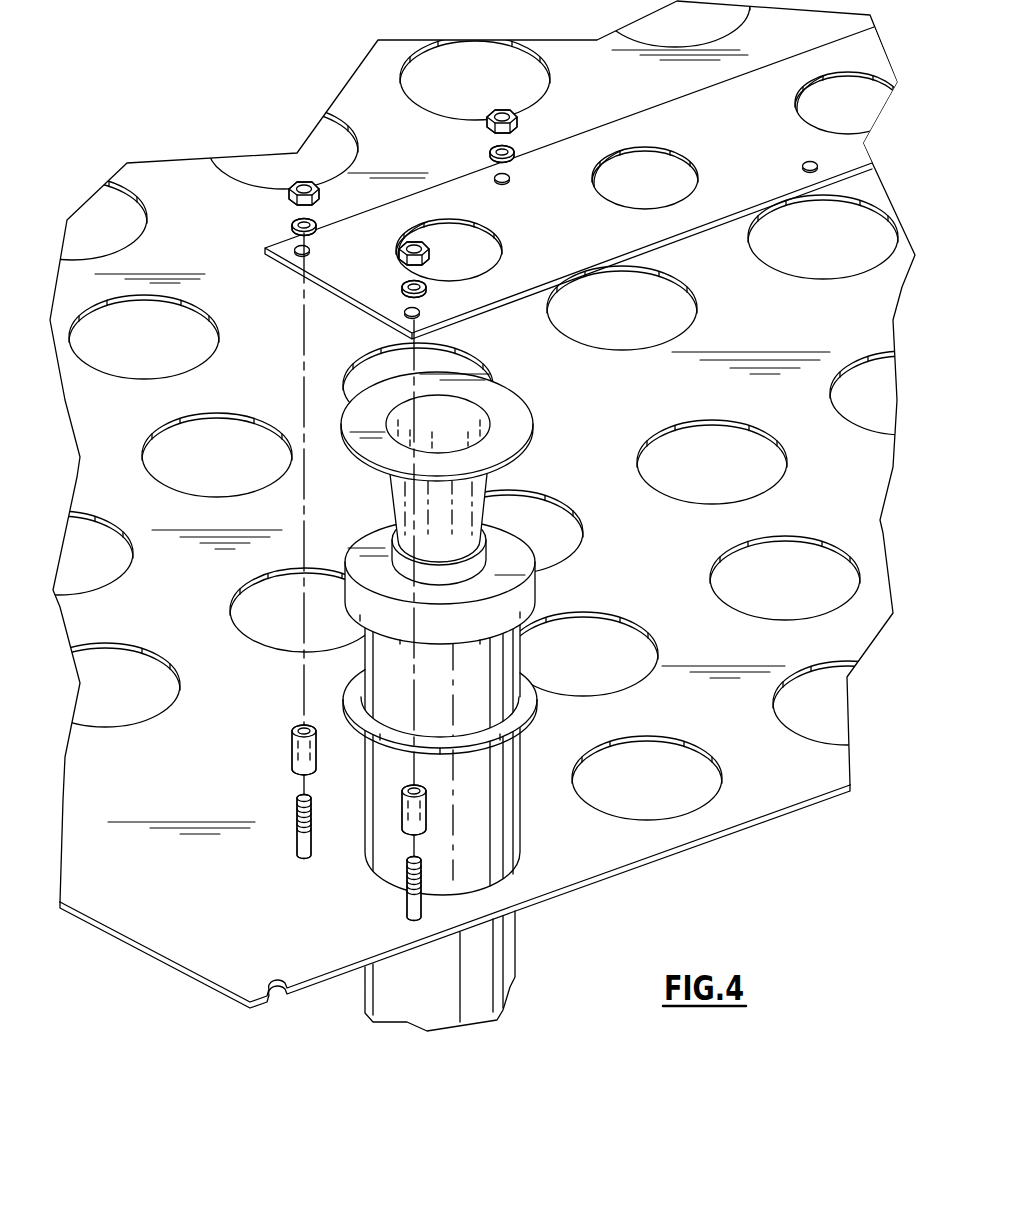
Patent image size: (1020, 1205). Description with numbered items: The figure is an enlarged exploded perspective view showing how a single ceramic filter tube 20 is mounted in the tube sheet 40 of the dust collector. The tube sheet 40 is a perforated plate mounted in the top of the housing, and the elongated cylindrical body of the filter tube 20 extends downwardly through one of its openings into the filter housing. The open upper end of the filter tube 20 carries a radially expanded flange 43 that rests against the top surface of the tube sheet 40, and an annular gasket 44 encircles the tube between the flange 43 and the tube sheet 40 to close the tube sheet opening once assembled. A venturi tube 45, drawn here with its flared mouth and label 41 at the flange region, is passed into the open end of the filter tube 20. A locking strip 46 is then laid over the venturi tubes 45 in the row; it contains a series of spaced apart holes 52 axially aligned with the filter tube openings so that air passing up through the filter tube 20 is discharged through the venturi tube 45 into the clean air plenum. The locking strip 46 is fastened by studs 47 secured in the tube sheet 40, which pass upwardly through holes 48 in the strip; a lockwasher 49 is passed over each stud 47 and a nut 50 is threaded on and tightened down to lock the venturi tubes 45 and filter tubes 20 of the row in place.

The filter tube 20 is at (512, 868).
The tube sheet 40 is at (722, 858).
The funnel flange 41 is at (374, 451).
The radially expanded flange 43 is at (538, 607).
The annular gasket 44 is at (350, 684).
The venturi tube 45 is at (465, 467).
The locking strip 46 is at (591, 191).
The stud 47 is at (407, 903).
The hole 48 is at (297, 257).
The lockwasher 49 is at (291, 227).
The nut 50 is at (488, 129).
The spaced apart hole 52 is at (703, 165).